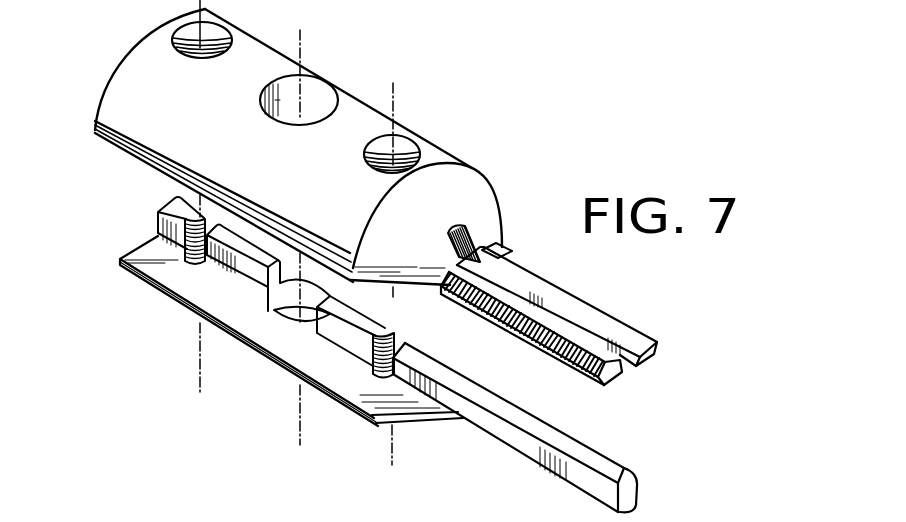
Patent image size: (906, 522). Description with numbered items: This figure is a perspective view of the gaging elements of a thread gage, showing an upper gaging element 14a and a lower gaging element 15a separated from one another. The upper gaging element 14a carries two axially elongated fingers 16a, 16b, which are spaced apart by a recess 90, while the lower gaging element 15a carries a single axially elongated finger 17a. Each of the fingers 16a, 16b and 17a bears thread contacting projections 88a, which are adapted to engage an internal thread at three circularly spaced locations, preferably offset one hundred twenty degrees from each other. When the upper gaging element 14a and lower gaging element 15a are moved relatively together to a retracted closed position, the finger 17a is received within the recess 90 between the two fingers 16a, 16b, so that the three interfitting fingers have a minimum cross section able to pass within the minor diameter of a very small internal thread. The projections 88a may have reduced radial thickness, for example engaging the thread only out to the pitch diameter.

The upper gaging element 14a is at (134, 80).
The lower gaging element 15a is at (176, 302).
The finger 16a is at (561, 348).
The finger 16b is at (599, 270).
The finger 17a is at (630, 478).
The thread contacting projections 88a is at (532, 338).
The recess 90 is at (502, 268).